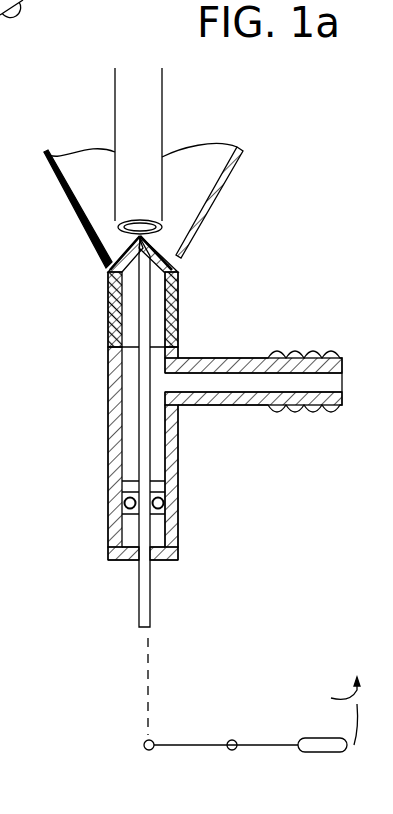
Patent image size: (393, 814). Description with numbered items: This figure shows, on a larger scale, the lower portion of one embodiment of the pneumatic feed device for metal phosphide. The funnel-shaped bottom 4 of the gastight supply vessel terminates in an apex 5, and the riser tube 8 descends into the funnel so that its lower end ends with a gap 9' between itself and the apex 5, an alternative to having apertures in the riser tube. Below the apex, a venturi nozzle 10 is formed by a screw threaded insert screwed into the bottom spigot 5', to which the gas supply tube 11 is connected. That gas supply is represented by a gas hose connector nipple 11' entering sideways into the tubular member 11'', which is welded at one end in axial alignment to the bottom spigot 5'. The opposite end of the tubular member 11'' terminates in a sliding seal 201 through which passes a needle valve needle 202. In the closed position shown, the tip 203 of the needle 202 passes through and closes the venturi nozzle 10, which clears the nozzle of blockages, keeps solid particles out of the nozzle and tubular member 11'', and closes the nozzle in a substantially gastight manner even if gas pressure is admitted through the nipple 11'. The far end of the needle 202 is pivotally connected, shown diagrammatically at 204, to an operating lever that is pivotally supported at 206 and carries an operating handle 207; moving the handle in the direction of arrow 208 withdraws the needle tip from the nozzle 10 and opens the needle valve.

The riser tube 8 is at (150, 112).
The bottom 4 is at (228, 164).
The tip 203 is at (147, 238).
The apex 5 is at (185, 254).
The bottom spigot 5' is at (183, 309).
The gap 9' is at (83, 253).
The venturi nozzle 10 is at (110, 290).
The gas supply tube 11 is at (223, 416).
The gas hose connector nipple 11' is at (253, 409).
The tubular member 11'' is at (66, 447).
The needle valve needle 202 is at (143, 446).
The sliding seal 201 is at (160, 537).
The pivotal connection 204 is at (144, 745).
The pivot support 206 is at (232, 740).
The operating handle 207 is at (315, 752).
The arrow 208 is at (324, 711).